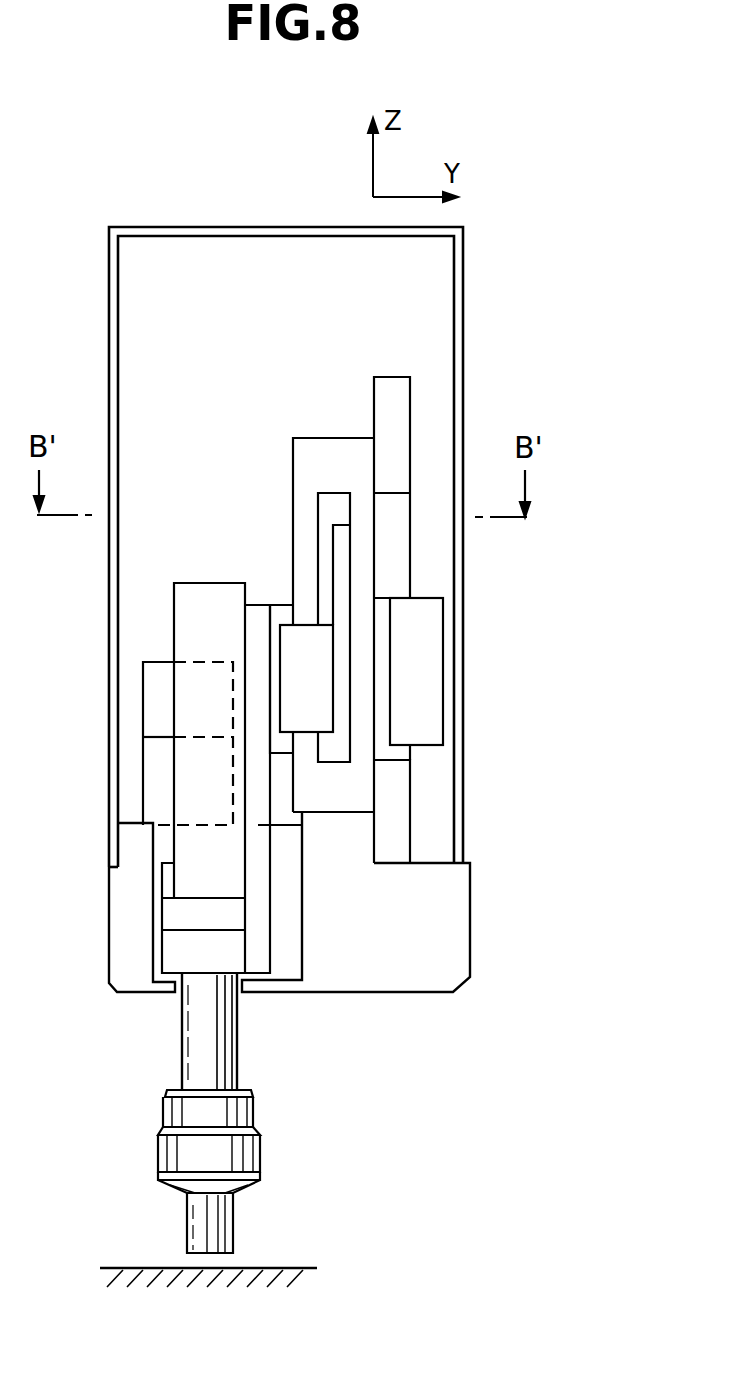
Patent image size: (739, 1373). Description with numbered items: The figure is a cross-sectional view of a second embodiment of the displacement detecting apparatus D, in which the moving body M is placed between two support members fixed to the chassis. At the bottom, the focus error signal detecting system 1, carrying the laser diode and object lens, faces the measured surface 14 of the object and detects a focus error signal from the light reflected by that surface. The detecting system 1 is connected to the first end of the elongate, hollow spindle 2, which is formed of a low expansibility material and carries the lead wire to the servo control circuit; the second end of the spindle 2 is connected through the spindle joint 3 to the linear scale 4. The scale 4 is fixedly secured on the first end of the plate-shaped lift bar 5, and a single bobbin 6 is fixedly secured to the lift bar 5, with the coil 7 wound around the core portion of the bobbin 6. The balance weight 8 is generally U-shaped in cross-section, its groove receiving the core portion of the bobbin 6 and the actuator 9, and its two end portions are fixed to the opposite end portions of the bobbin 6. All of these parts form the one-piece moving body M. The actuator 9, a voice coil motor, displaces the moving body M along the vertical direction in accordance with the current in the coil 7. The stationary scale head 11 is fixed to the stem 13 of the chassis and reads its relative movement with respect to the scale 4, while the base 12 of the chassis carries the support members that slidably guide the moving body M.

The focus error signal detecting system 1 is at (240, 1153).
The spindle 2 is at (198, 1048).
The spindle joint 3 is at (188, 955).
The scale 4 is at (194, 868).
The lift bar 5 is at (258, 948).
The bobbin 6 is at (278, 613).
The coil 7 is at (315, 708).
The balance weight 8 is at (427, 681).
The actuator 9 is at (363, 558).
The scale head 11 is at (157, 780).
The base 12 is at (393, 828).
The stem 13 is at (435, 945).
The measured surface 14 is at (262, 1283).
The moving body M is at (173, 631).
The displacement detecting apparatus D is at (468, 306).